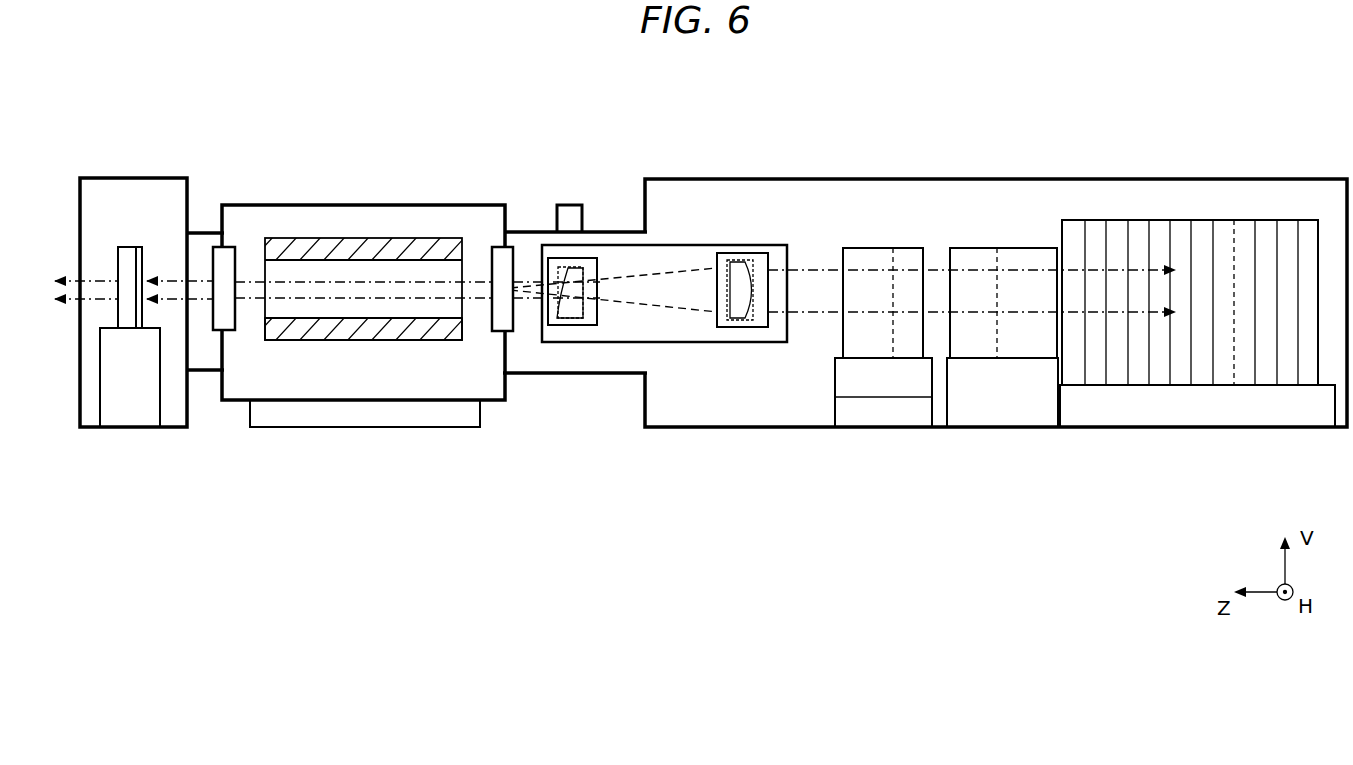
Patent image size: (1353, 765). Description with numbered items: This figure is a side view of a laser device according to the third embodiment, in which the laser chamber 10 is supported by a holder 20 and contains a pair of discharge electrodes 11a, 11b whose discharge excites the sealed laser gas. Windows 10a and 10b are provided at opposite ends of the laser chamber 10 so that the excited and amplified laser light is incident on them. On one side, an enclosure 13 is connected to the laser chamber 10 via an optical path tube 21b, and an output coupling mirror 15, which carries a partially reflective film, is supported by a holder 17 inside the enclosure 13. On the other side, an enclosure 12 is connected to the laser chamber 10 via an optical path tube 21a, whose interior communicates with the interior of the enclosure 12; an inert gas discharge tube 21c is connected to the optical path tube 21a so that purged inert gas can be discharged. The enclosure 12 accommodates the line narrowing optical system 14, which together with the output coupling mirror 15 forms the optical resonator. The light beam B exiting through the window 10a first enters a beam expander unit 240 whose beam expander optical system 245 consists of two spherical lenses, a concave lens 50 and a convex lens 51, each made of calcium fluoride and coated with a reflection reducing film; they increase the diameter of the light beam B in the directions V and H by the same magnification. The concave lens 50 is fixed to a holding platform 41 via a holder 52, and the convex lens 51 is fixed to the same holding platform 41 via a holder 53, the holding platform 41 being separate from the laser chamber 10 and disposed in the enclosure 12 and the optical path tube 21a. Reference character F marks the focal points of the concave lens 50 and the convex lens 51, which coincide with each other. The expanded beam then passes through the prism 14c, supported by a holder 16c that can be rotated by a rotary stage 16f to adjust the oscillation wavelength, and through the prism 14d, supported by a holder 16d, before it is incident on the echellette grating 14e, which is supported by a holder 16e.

The laser chamber 10 is at (370, 205).
The window 10a is at (493, 247).
The window 10b is at (233, 247).
The discharge electrode 11a is at (281, 239).
The discharge electrode 11b is at (290, 340).
The enclosure 12 is at (655, 178).
The enclosure 13 is at (128, 178).
The line narrowing optical system 14 is at (1012, 286).
The prism 14c is at (870, 248).
The prism 14d is at (990, 248).
The grating 14e is at (1178, 220).
The output coupling mirror 15 is at (128, 327).
The holder 16c is at (862, 390).
The holder 16d is at (995, 430).
The holder 16e is at (1152, 430).
The rotary stage 16f is at (912, 420).
The holder 17 is at (122, 408).
The holder 20 is at (328, 428).
The optical path tube 21a is at (578, 375).
The optical path tube 21b is at (213, 372).
The inert gas discharge tube 21c is at (557, 208).
The holding platform 41 is at (708, 343).
The concave lens 50 is at (567, 268).
The convex lens 51 is at (727, 265).
The holder 52 is at (583, 262).
The holder 53 is at (760, 257).
The beam expander unit 240 is at (725, 400).
The beam expander optical system 245 is at (658, 362).
The focal point F is at (511, 287).
The light beam B is at (540, 300).